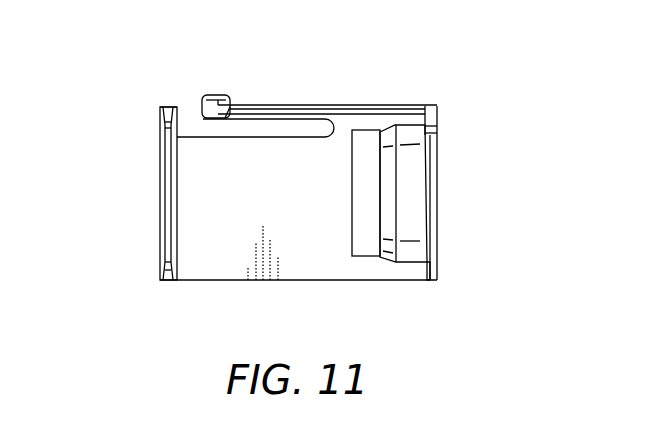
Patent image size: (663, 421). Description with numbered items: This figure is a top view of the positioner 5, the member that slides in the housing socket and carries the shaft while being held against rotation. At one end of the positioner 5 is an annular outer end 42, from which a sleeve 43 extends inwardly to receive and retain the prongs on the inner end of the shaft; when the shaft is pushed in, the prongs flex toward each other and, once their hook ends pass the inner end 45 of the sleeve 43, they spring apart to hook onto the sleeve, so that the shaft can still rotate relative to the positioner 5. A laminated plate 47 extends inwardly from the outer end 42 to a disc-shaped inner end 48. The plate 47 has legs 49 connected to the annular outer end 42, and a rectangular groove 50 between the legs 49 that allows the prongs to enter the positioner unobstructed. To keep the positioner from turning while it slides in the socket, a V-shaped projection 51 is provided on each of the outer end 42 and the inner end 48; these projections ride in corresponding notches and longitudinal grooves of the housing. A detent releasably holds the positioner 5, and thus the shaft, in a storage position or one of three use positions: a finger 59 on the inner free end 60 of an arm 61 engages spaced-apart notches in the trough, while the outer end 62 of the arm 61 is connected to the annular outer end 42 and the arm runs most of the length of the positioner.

The positioner 5 is at (161, 281).
The annular outer end 42 is at (437, 229).
The sleeve 43 is at (412, 262).
The inner end of the sleeve 45 is at (379, 170).
The laminated plate 47 is at (242, 219).
The disc-shaped inner end 48 is at (164, 183).
The legs 49 is at (390, 124).
The rectangular groove 50 is at (352, 204).
The V-shaped projection 51 is at (165, 131).
The finger 59 is at (214, 95).
The inner free end 60 is at (233, 106).
The arm 61 is at (343, 104).
The outer end of the arm 62 is at (434, 106).